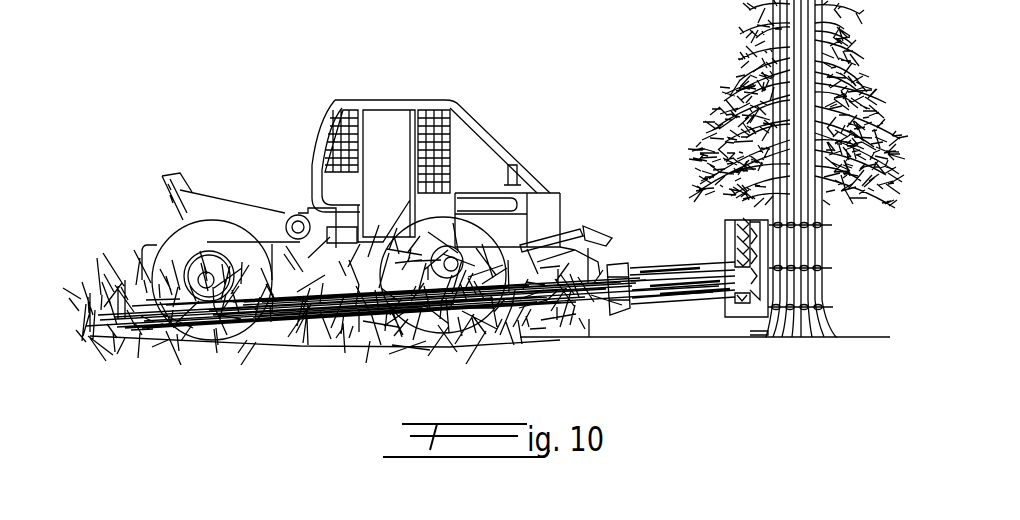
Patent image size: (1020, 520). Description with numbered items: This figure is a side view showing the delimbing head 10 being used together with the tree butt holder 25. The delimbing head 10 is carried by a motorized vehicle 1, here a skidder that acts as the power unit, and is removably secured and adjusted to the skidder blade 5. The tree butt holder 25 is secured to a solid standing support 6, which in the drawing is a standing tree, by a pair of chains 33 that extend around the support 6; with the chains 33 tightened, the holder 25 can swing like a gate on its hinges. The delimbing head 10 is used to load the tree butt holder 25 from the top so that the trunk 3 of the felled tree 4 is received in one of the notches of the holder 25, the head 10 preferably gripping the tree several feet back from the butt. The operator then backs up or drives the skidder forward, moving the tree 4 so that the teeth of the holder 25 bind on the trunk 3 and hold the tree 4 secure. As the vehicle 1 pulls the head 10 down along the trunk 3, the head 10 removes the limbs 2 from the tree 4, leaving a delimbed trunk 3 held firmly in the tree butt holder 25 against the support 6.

The motorized vehicle 1 is at (268, 190).
The limbs 2 is at (112, 290).
The trunk 3 is at (290, 330).
The tree 4 is at (480, 312).
The skidder blade 5 is at (610, 262).
The delimbing head 10 is at (618, 255).
The tree butt holder 25 is at (728, 234).
The support 6 is at (812, 210).
The chains 33 is at (827, 228).